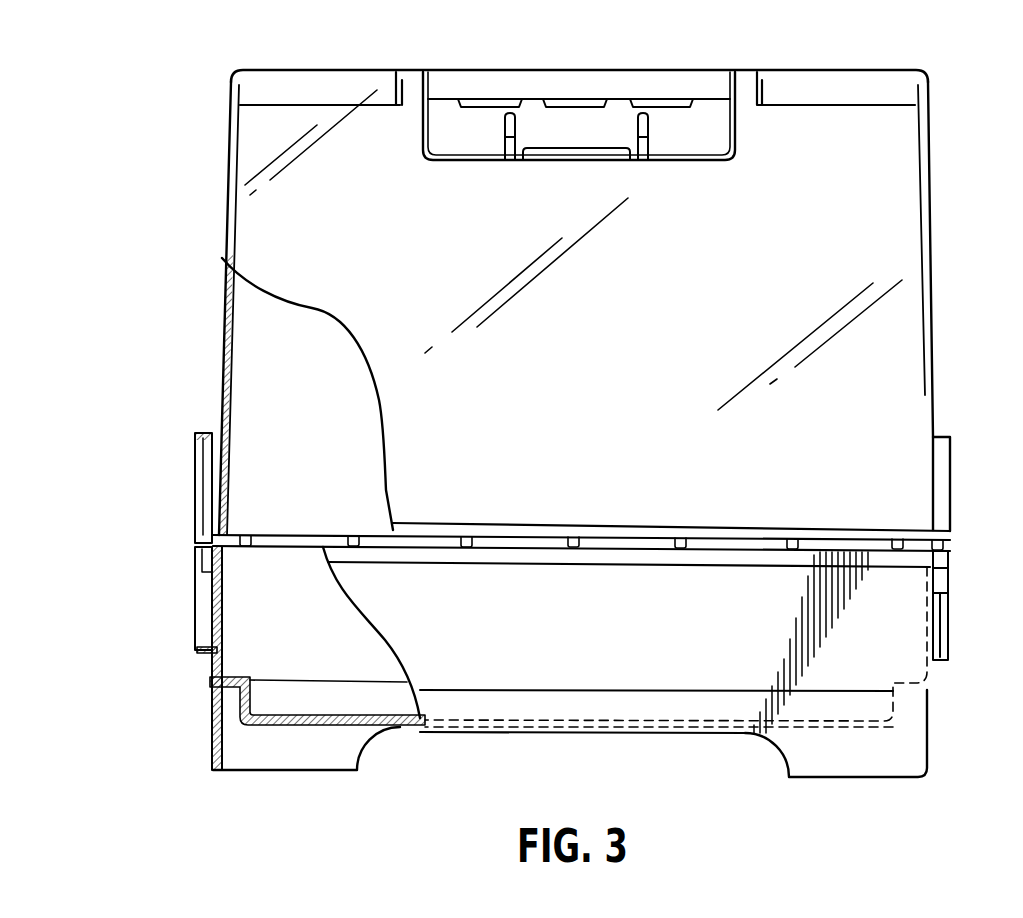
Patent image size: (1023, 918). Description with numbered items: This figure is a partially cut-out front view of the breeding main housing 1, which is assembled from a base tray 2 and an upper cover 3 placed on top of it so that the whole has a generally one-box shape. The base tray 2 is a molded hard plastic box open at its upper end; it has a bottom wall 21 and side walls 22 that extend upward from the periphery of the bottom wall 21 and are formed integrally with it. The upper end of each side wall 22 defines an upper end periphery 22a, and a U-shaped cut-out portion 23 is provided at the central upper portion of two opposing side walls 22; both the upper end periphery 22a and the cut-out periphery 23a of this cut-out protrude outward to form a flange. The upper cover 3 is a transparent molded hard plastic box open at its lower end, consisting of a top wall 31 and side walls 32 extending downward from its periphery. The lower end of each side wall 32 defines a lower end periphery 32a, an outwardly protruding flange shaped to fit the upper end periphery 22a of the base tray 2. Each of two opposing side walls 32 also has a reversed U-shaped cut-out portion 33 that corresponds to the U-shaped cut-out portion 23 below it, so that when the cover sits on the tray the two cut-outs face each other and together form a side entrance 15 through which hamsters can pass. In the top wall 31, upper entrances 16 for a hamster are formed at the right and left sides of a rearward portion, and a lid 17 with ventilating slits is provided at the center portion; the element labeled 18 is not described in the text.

The breeding main housing 1 is at (962, 172).
The base tray 2 is at (590, 703).
The upper cover 3 is at (907, 292).
The side entrance 15 is at (106, 512).
The upper entrance 16 is at (320, 92).
The lid 17 is at (613, 123).
The handle 18 is at (572, 100).
The bottom wall 21 is at (403, 728).
The side wall 22 is at (513, 667).
The upper end periphery 22a is at (547, 560).
The U-shaped cut-out portion 23 is at (202, 598).
The cut-out periphery 23a is at (197, 652).
The top wall 31 is at (800, 70).
The side wall 32 is at (897, 373).
The lower end periphery 32a is at (528, 527).
The reversed U-shaped cut-out portion 33 is at (195, 503).